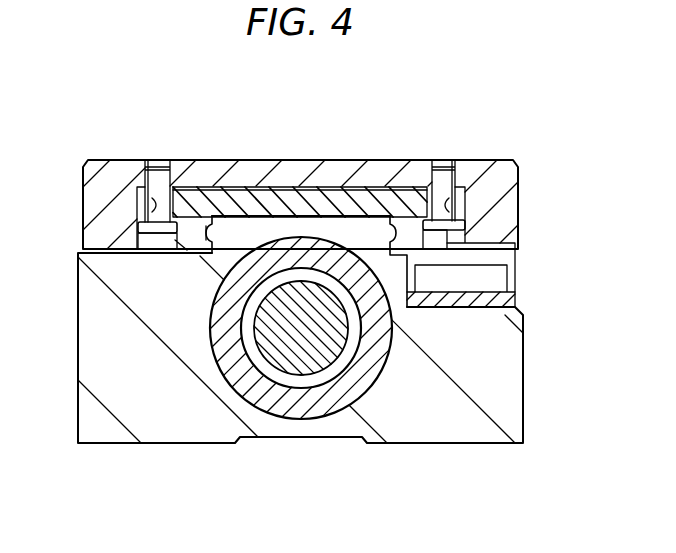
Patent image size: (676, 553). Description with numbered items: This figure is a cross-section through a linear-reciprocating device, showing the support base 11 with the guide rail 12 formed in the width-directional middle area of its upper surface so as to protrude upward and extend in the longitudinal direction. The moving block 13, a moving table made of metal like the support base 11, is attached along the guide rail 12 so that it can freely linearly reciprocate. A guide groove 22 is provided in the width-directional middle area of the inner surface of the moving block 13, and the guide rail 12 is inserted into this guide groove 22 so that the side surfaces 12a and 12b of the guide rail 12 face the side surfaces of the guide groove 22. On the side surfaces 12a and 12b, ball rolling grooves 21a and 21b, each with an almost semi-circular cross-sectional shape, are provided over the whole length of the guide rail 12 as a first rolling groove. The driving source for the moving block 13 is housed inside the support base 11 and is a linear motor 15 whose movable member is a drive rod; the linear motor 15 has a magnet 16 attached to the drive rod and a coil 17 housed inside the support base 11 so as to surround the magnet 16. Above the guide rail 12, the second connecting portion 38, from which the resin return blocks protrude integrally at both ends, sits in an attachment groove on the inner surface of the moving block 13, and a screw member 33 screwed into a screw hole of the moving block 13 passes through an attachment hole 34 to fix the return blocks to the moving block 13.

The support base 11 is at (467, 410).
The guide rail 12 is at (266, 232).
The side surface of the guide rail 12a is at (208, 232).
The side surface of the guide rail 12b is at (390, 228).
The moving block 13 is at (483, 192).
The linear motor 15 is at (274, 385).
The magnet 16 is at (302, 337).
The coil 17 is at (342, 395).
The ball rolling groove 21a is at (198, 200).
The ball rolling groove 21b is at (403, 220).
The guide groove 22 is at (303, 200).
The screw member 33 is at (155, 187).
The attachment hole 34 is at (150, 213).
The second connecting portion 38 is at (357, 205).